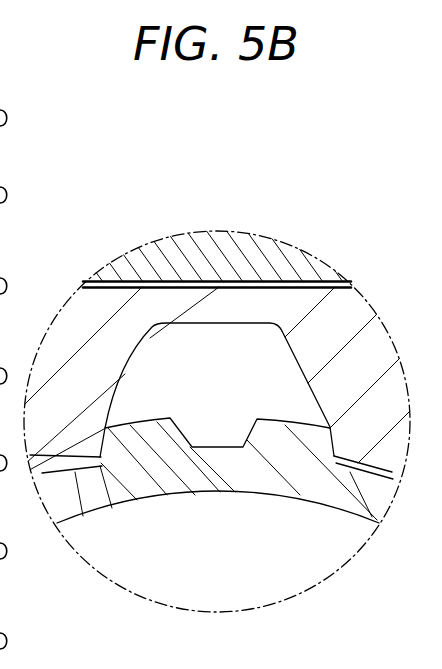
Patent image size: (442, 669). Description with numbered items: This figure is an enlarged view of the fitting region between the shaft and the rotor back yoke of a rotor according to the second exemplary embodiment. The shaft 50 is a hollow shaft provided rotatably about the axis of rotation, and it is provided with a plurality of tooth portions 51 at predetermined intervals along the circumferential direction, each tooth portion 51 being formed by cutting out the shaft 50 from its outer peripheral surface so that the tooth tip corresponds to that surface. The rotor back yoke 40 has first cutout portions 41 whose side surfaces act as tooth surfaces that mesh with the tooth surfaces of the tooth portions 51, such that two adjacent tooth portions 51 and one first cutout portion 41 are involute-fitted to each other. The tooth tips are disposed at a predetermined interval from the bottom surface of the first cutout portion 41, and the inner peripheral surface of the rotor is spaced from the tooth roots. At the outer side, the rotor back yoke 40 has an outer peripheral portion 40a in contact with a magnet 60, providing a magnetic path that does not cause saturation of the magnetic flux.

The rotor back yoke 40 is at (87, 322).
The outer peripheral portion 40a is at (233, 305).
The first cutout portion 41 is at (257, 356).
The shaft 50 is at (192, 468).
The tooth portion 51 is at (287, 443).
The magnet 60 is at (172, 262).